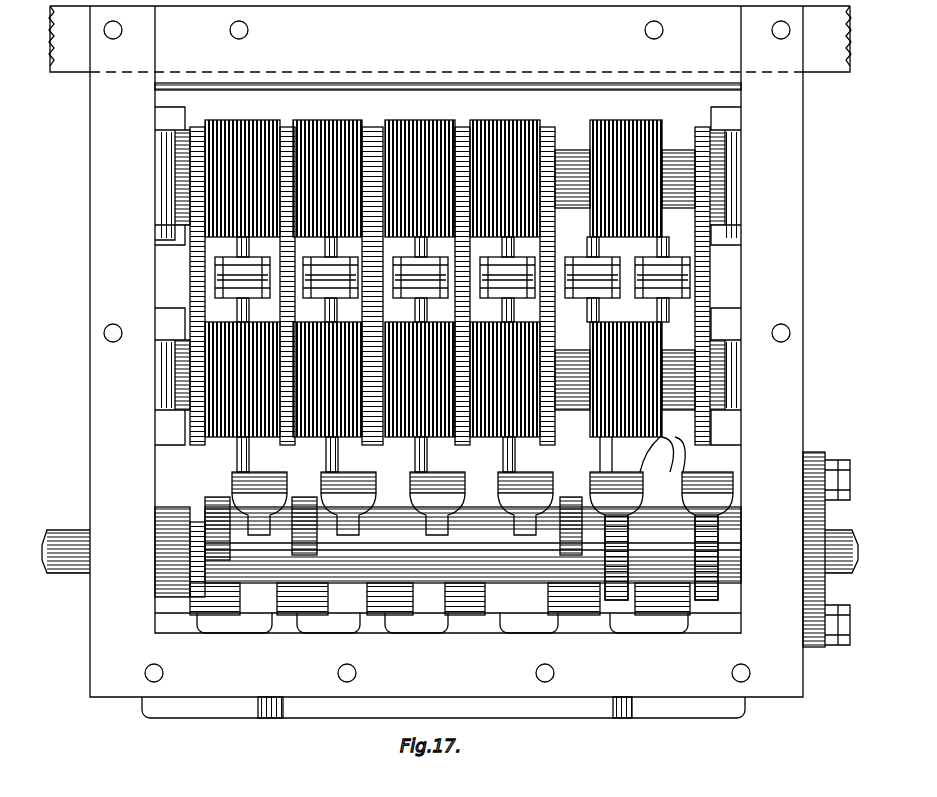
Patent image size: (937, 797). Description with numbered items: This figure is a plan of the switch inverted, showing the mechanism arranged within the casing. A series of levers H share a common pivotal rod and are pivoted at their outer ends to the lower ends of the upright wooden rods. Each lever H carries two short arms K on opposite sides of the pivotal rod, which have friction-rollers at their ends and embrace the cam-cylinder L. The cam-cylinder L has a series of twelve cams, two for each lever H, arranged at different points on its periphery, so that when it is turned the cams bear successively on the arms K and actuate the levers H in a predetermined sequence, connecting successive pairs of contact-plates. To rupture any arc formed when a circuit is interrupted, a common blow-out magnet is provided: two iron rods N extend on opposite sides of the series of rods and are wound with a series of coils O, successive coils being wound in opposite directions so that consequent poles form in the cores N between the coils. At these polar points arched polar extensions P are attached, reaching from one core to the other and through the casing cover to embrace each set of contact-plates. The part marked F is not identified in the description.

The coils O is at (428, 121).
The arched polar extensions P is at (190, 268).
The frame bar F is at (240, 262).
The iron rods N is at (565, 150).
The levers H is at (196, 436).
The short arms K is at (618, 472).
The cam-cylinder L is at (408, 560).